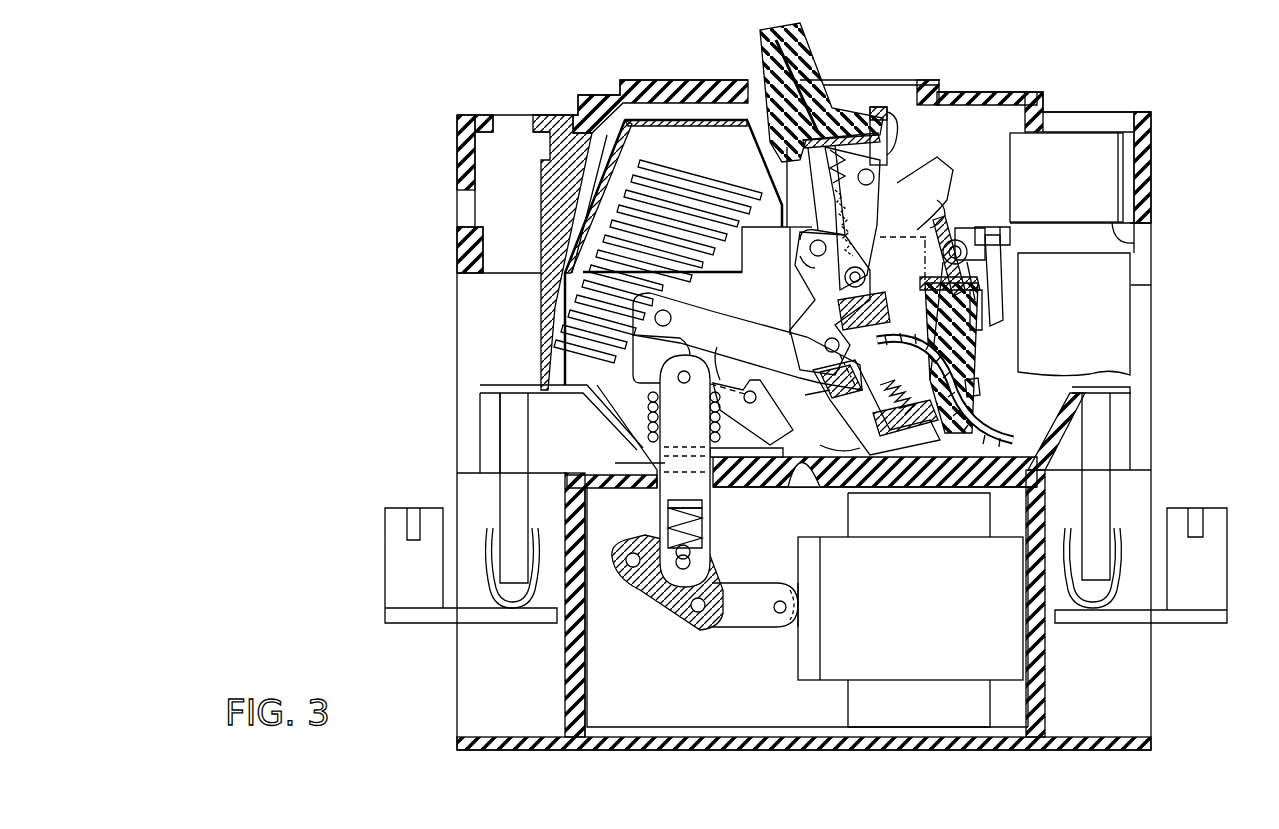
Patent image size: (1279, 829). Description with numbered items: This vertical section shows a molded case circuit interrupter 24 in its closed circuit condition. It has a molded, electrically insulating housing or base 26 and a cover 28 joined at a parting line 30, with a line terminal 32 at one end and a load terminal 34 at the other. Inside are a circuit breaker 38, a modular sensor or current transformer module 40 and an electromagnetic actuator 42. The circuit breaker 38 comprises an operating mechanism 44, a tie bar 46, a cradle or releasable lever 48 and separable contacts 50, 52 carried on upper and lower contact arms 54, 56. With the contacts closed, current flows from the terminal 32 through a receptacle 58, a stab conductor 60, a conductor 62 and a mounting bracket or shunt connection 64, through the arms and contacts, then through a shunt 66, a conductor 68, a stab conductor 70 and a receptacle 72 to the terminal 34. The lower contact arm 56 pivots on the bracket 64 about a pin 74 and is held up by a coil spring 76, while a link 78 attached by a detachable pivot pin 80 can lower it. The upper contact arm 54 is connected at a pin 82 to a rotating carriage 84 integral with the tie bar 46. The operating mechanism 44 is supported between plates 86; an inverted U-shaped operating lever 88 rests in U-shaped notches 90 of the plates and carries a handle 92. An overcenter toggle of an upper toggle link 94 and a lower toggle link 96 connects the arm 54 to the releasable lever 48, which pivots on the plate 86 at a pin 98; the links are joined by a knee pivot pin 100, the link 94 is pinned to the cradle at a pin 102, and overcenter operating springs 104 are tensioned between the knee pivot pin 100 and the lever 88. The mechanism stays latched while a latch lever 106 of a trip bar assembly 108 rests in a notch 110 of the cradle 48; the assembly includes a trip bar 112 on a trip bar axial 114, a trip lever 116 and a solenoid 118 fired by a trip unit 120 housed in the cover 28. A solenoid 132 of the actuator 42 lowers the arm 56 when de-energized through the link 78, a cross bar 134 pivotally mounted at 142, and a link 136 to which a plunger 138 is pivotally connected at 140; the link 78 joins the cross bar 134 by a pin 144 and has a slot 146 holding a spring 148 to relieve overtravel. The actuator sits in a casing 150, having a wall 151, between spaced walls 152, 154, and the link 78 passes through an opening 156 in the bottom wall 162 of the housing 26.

The molded case circuit interrupter 24 is at (1008, 779).
The housing or base 26 is at (1152, 327).
The cover 28 is at (1154, 128).
The parting line 30 is at (1152, 234).
The line terminal 32 is at (400, 581).
The load terminal 34 is at (1222, 588).
The circuit breaker 38 is at (760, 278).
The modular sensor or current transformer module 40 is at (1058, 311).
The electromagnetic actuator 42 is at (774, 533).
The operating mechanism 44 is at (783, 218).
The tie bar 46 is at (857, 377).
The cradle or releasable lever 48 is at (903, 185).
The separable contact 50 is at (672, 328).
The separable contact 52 is at (660, 359).
The upper contact arm 54 is at (762, 330).
The lower contact arm 56 is at (720, 358).
The receptacle 58 is at (688, 185).
The stab conductor 60 is at (526, 493).
The conductor 62 is at (550, 396).
The mounting bracket or shunt connection 64 is at (752, 426).
The shunt 66 is at (965, 380).
The conductor 68 is at (1058, 412).
The stab conductor 70 is at (1105, 426).
The receptacle 72 is at (1116, 560).
The pin 74 is at (757, 394).
The coil spring 76 is at (650, 410).
The link 78 is at (672, 441).
The detachable pivot pin 80 is at (680, 384).
The pin 82 is at (824, 346).
The rotating carriage 84 is at (878, 336).
The plate 86 is at (808, 421).
The inverted U-shaped operating lever 88 is at (897, 128).
The U-shaped notches 90 is at (904, 259).
The handle 92 is at (805, 36).
The upper toggle link 94 is at (873, 214).
The lower toggle link 96 is at (805, 302).
The pin 98 is at (808, 247).
The knee pivot pin 100 is at (848, 285).
The pin 102 is at (866, 169).
The overcenter operating springs 104 is at (815, 163).
The latch lever 106 is at (938, 223).
The trip bar assembly 108 is at (976, 198).
The notch 110 is at (938, 202).
The trip bar 112 is at (968, 384).
The trip bar axial 114 is at (975, 340).
The trip lever 116 is at (1003, 274).
The solenoid 118 is at (1000, 238).
The trip unit 120 is at (1044, 185).
The solenoid 132 is at (885, 616).
The cross bar 134 is at (642, 588).
The link 136 is at (745, 584).
The plunger 138 is at (796, 628).
The pivotal connection 140 is at (774, 605).
The pivot mounting 142 is at (633, 553).
The pin 144 is at (692, 552).
The slot 146 is at (702, 521).
The spring 148 is at (704, 502).
The housing or casing 150 is at (586, 690).
The wall 151 is at (810, 484).
The spaced wall 152 is at (565, 648).
The spaced wall 154 is at (1045, 658).
The opening 156 is at (618, 458).
The bottom wall 162 is at (845, 445).